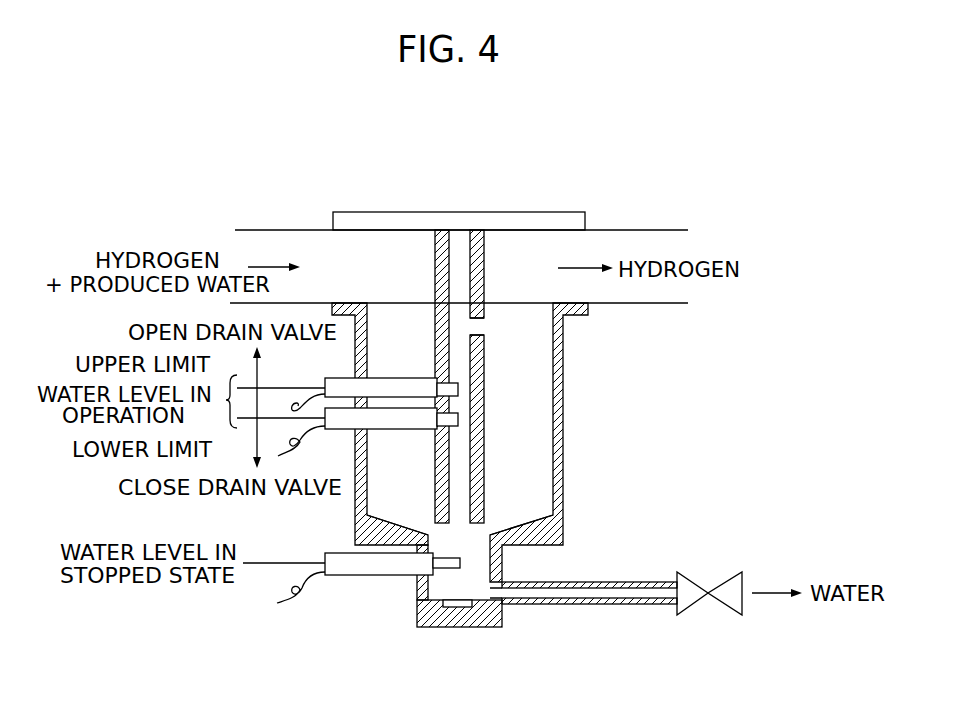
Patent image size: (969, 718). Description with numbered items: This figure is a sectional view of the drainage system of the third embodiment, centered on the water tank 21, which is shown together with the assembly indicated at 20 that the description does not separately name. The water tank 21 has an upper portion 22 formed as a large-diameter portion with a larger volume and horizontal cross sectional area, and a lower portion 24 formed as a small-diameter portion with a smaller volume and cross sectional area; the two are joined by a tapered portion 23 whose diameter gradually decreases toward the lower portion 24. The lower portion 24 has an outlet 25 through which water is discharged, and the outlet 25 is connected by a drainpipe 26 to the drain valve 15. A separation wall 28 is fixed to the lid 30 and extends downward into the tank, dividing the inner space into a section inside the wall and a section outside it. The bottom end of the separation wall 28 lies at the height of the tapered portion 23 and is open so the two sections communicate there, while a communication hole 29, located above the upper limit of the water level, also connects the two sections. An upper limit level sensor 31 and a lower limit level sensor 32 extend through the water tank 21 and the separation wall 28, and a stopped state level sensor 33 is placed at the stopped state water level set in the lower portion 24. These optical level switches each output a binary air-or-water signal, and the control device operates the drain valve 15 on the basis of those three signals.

The drain valve 15 is at (742, 610).
The gas-liquid separator 20 is at (364, 244).
The water tank 21 is at (564, 378).
The upper portion 22 is at (556, 443).
The tapered portion 23 is at (552, 514).
The lower portion 24 is at (492, 562).
The outlet 25 is at (500, 590).
The drainpipe 26 is at (640, 605).
The separation wall 28 is at (476, 486).
The communication hole 29 is at (472, 327).
The lid 30 is at (587, 227).
The upper limit level sensor 31 is at (400, 376).
The lower limit level sensor 32 is at (400, 431).
The stopped state level sensor 33 is at (375, 577).